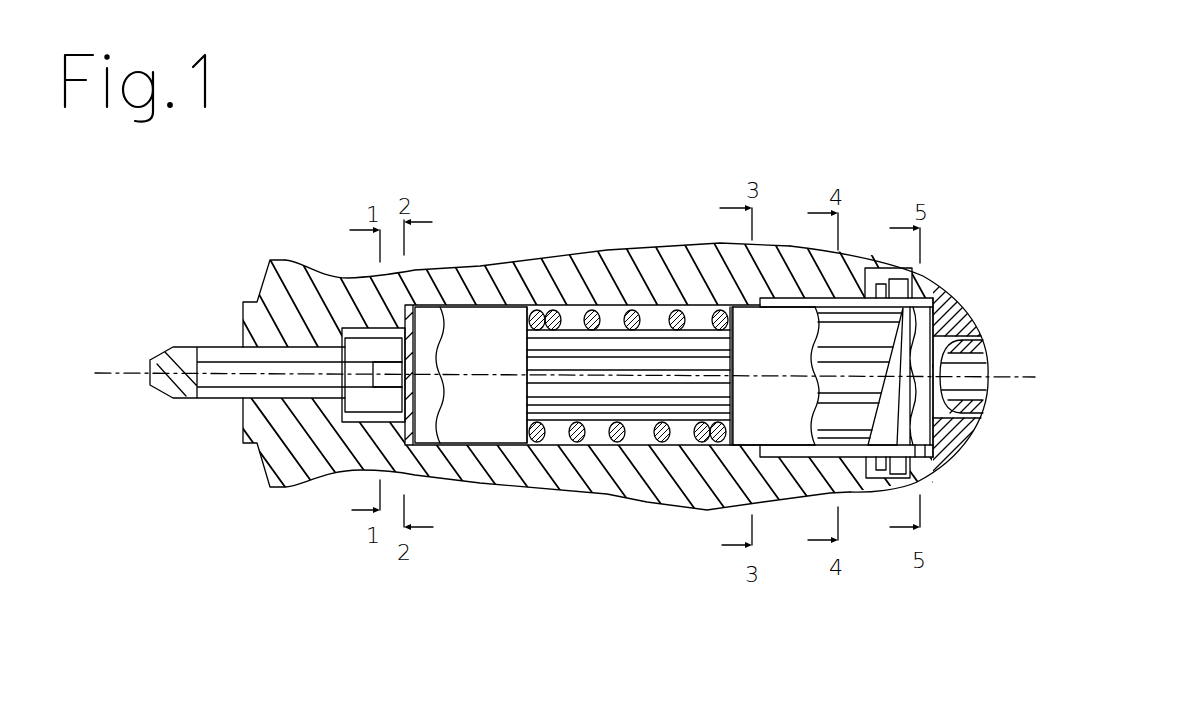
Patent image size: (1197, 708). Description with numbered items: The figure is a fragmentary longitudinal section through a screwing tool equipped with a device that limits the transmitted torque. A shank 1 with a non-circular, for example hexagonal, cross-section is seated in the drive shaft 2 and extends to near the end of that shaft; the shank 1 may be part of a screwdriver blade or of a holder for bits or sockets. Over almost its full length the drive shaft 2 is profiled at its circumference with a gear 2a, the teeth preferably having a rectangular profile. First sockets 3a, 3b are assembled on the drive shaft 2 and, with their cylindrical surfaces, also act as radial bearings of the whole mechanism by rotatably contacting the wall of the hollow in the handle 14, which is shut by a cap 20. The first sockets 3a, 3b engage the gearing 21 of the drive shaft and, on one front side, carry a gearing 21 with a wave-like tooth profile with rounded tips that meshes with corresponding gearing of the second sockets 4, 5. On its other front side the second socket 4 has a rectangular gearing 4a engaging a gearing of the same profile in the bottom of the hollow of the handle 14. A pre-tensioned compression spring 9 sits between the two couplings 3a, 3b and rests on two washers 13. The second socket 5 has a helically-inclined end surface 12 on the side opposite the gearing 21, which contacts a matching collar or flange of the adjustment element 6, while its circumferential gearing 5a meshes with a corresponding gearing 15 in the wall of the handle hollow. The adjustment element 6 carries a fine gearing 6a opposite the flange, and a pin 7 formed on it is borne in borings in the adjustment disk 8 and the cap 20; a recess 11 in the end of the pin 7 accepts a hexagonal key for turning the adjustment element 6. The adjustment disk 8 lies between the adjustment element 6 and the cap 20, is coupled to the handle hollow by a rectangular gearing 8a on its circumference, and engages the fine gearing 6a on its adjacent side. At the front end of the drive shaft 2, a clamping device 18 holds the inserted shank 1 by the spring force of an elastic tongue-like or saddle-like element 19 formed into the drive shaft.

The shank 1 is at (222, 373).
The drive shaft 2 is at (582, 360).
The gear 2a is at (598, 397).
The first socket 3a is at (488, 337).
The first socket 3b is at (753, 340).
The second socket 4 is at (428, 347).
The gearing 4a is at (414, 447).
The second socket 5 is at (860, 330).
The gearing 5a is at (840, 358).
The adjustment element 6 is at (892, 425).
The fine gearing 6a is at (945, 298).
The pin 7 is at (970, 320).
The adjustment disk 8 is at (922, 422).
The rectangular gearing 8a is at (927, 457).
The compression spring 9 is at (635, 310).
The recess 11 is at (953, 383).
The helically-inclined end surface 12 is at (915, 298).
The washers 13 is at (527, 443).
The handle 14 is at (290, 300).
The gearing 15 is at (785, 452).
The clamping device 18 is at (358, 373).
The elastic tongue-like or saddle-like element 19 is at (388, 400).
The cap 20 is at (952, 437).
The gearing 21 is at (433, 348).